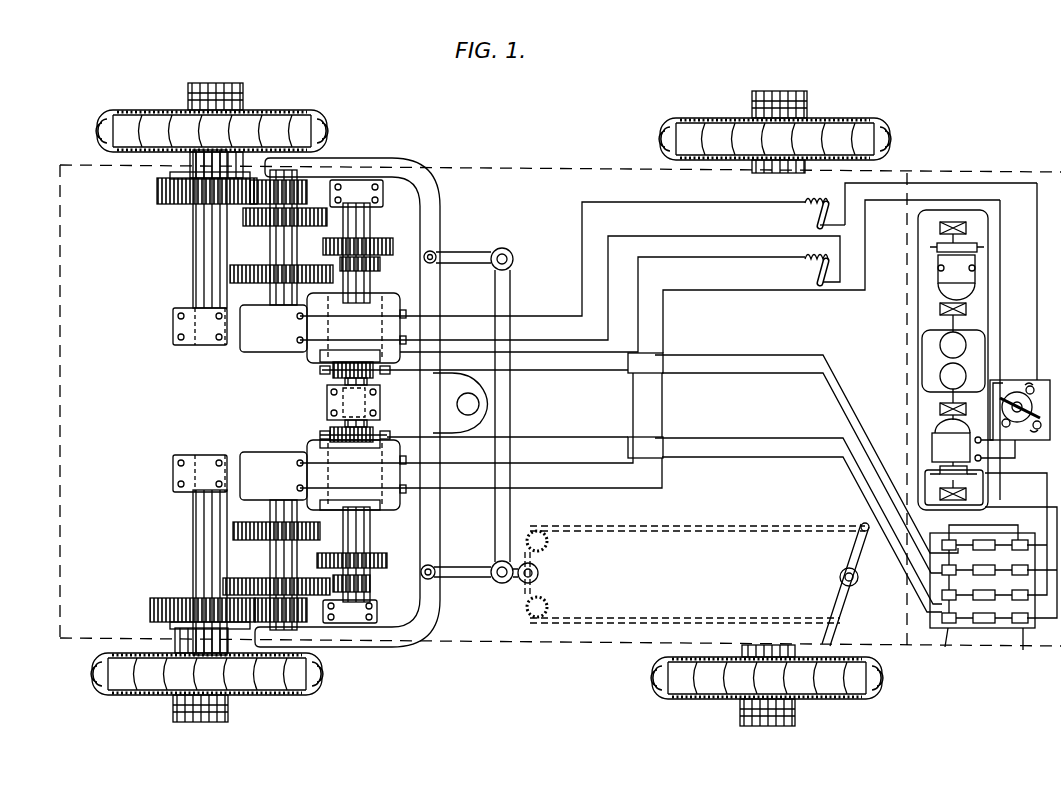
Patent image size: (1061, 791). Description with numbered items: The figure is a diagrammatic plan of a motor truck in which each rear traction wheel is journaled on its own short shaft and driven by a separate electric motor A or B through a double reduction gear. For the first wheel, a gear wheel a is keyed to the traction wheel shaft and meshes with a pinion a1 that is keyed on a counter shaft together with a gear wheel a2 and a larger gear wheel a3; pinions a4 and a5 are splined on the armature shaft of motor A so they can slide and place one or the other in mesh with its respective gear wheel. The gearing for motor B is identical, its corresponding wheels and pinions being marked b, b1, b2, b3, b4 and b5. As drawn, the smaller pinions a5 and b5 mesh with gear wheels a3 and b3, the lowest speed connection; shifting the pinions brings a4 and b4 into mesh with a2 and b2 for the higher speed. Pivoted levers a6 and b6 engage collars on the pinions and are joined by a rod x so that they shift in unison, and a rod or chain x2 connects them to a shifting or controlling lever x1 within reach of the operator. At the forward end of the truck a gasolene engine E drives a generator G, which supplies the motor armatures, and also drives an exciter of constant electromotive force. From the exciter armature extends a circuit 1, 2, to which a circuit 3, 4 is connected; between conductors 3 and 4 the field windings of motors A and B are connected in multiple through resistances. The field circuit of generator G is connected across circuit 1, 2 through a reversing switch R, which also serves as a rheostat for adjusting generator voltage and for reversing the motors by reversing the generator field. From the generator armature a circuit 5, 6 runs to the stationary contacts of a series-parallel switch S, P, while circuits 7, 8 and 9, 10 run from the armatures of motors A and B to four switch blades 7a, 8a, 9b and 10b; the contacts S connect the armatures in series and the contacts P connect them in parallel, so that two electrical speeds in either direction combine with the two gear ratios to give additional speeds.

The gear wheel a is at (194, 229).
The pinion a1 is at (315, 189).
The gear wheel a2 is at (282, 228).
The gear wheel a3 is at (281, 283).
The pinion a4 is at (367, 253).
The pinion a5 is at (380, 268).
The pivoted lever a6 is at (468, 398).
The gear wheel b is at (191, 572).
The pinion b1 is at (289, 565).
The gear wheel b2 is at (273, 521).
The gear wheel b3 is at (276, 574).
The pinion b4 is at (360, 554).
The pinion b5 is at (370, 584).
The pivoted lever b6 is at (467, 566).
The electric motor A is at (289, 328).
The electric motor B is at (289, 475).
The rod x is at (528, 556).
The shifting or controlling lever x1 is at (845, 584).
The rod or chain x2 is at (697, 574).
The exciter circuit conductor 1 is at (1046, 281).
The exciter circuit conductor 2 is at (1007, 350).
The field circuit conductor 3 is at (941, 196).
The field circuit conductor 4 is at (831, 274).
The generator armature circuit conductor 5 is at (1016, 531).
The generator armature circuit conductor 6 is at (1021, 553).
The motor armature circuit conductor 7 is at (806, 445).
The motor armature circuit conductor 8 is at (802, 473).
The motor armature circuit conductor 9 is at (798, 511).
The motor armature circuit conductor 10 is at (802, 533).
The switch blade 7a is at (985, 544).
The switch blade 8a is at (985, 569).
The switch blade 9b is at (985, 594).
The switch blade 10b is at (985, 617).
The gasolene engine E is at (918, 356).
The generator G is at (932, 446).
The switch K is at (938, 266).
The reversing switch R is at (1020, 399).
The series contacts S is at (947, 650).
The parallel contacts P is at (1027, 650).